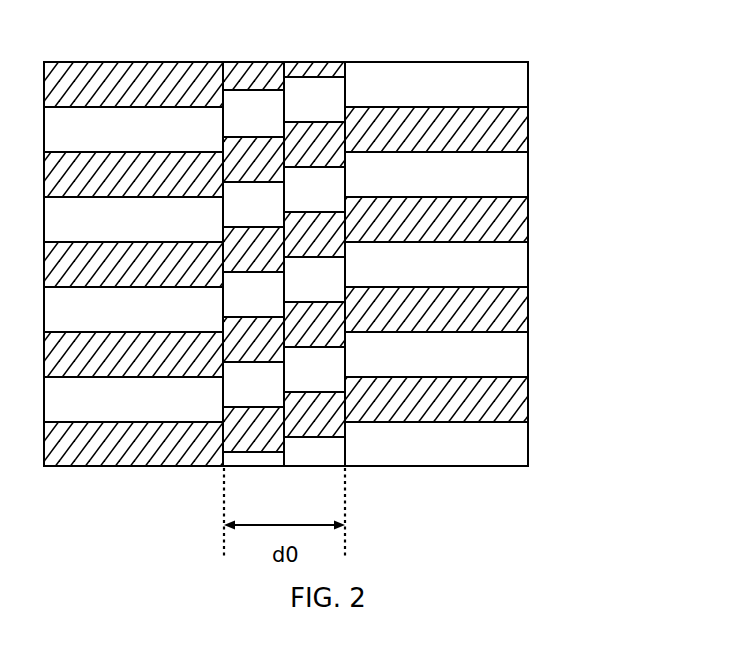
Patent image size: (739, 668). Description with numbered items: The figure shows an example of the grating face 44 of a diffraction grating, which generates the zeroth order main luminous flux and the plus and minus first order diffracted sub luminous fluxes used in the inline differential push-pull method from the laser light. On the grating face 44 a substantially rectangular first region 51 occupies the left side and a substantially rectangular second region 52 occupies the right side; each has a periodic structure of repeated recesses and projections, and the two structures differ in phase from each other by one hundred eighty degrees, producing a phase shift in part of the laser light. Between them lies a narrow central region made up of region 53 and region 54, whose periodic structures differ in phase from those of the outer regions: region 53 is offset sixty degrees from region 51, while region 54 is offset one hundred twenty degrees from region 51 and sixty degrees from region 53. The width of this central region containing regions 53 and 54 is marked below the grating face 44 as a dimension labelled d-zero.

The grating face 44 is at (578, 200).
The region 51 is at (132, 62).
The region 52 is at (437, 62).
The region 53 is at (253, 62).
The region 54 is at (313, 62).